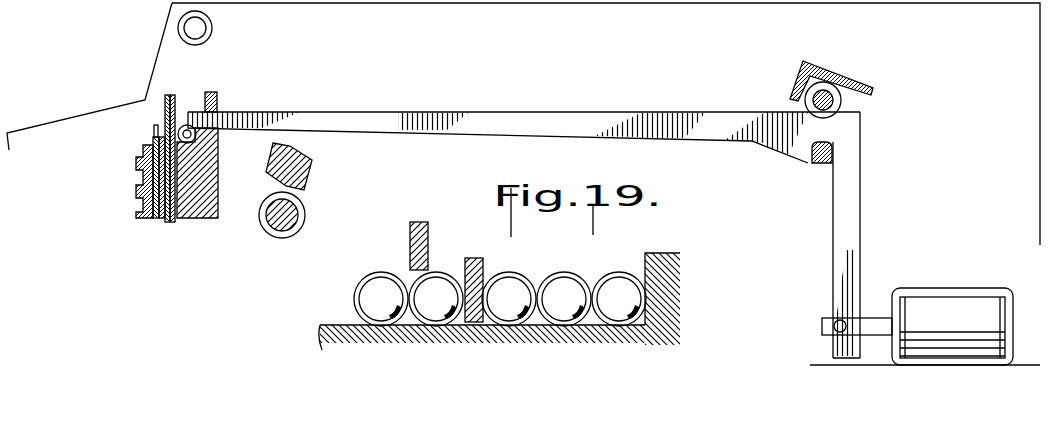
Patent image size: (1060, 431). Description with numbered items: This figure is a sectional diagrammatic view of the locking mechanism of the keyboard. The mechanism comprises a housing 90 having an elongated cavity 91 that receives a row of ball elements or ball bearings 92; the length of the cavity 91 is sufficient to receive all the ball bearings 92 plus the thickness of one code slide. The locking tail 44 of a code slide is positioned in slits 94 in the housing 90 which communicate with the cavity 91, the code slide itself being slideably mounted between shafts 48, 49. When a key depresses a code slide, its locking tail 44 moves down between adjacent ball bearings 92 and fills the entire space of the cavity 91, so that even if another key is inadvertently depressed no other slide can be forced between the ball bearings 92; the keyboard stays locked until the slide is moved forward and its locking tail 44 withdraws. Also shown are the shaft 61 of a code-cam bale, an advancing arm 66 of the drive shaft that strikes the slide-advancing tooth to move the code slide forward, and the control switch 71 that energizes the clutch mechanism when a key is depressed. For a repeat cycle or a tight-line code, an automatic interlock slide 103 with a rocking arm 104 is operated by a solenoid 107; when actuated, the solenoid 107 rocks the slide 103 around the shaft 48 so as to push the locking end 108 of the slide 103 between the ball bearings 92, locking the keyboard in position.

The locking tail 44 is at (430, 224).
The shaft 48 is at (815, 165).
The shaft 49 is at (836, 95).
The shaft 61 is at (303, 152).
The advancing arm 66 is at (270, 172).
The control switch 71 is at (158, 228).
The housing 90 is at (194, 222).
The elongated cavity 91 is at (193, 146).
The ball bearings 92 is at (183, 131).
The slits 94 is at (198, 134).
The automatic interlock slide 103 is at (558, 118).
The rocking arm 104 is at (852, 222).
The solenoid 107 is at (953, 302).
The locking end 108 is at (196, 111).